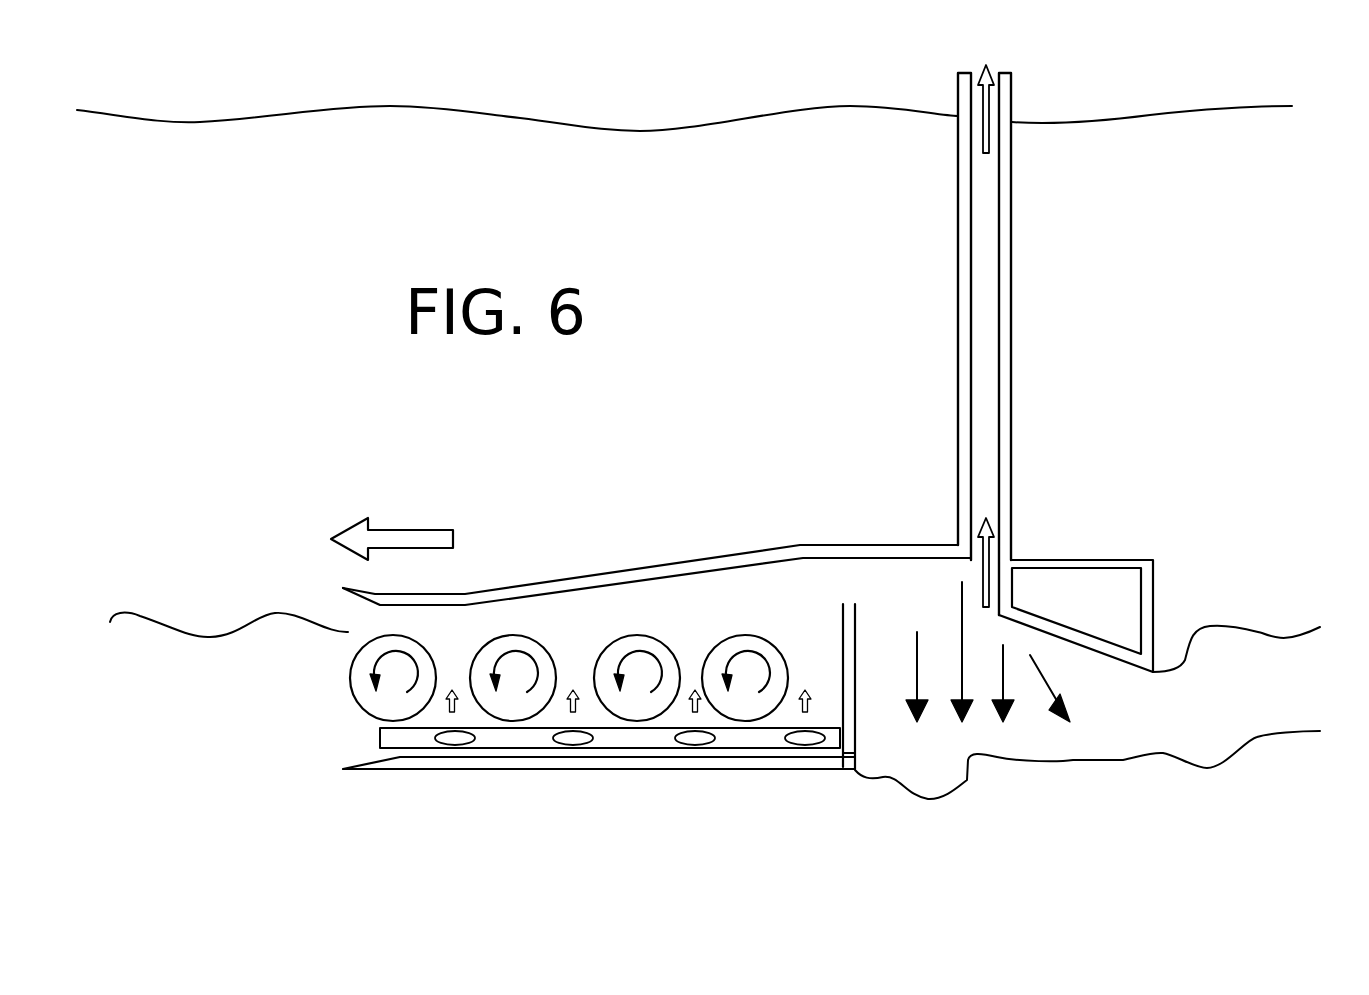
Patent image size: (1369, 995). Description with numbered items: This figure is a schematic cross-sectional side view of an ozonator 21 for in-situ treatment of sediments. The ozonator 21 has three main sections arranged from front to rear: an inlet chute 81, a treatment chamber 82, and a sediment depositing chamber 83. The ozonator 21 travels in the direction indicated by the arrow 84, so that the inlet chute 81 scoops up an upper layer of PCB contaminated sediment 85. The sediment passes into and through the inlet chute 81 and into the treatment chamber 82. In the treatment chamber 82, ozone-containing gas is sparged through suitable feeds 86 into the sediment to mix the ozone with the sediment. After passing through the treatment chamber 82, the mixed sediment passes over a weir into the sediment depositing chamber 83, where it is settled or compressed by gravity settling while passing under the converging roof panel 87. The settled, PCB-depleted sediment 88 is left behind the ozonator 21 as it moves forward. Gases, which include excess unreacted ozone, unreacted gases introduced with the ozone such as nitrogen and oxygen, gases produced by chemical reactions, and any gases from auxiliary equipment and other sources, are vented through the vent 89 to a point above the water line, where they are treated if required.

The ozonator 21 is at (1140, 470).
The inlet chute 81 is at (373, 788).
The treatment chamber 82 is at (840, 780).
The sediment depositing chamber 83 is at (1178, 772).
The arrow 84 is at (405, 537).
The PCB contaminated sediment 85 is at (208, 702).
The feeds 86 is at (855, 628).
The converging roof panel 87 is at (1043, 625).
The PCB-depleted sediment 88 is at (1273, 665).
The vent 89 is at (957, 230).